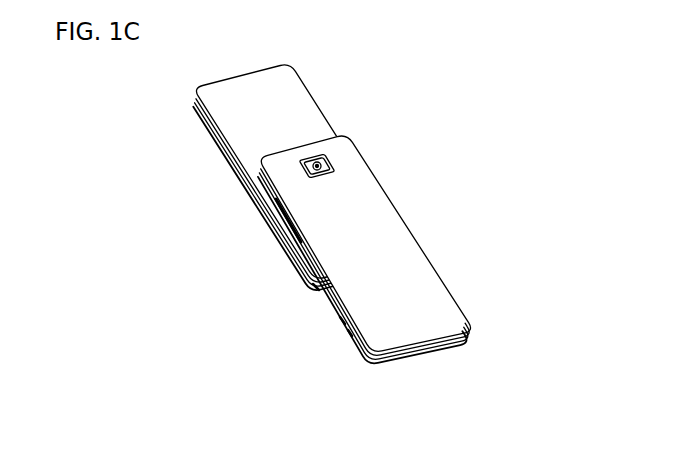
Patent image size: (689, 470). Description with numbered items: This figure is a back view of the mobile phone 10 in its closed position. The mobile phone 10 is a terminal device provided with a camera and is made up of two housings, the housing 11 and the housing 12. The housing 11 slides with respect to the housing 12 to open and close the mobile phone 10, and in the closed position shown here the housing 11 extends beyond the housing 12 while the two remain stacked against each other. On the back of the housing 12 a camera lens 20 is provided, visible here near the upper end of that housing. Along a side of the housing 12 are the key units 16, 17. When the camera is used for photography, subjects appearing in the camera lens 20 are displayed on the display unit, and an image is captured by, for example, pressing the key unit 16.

The mobile phone 10 is at (452, 81).
The housing 11 is at (283, 76).
The housing 12 is at (452, 318).
The camera lens 20 is at (323, 156).
The key unit 16 is at (318, 298).
The key unit 17 is at (342, 328).